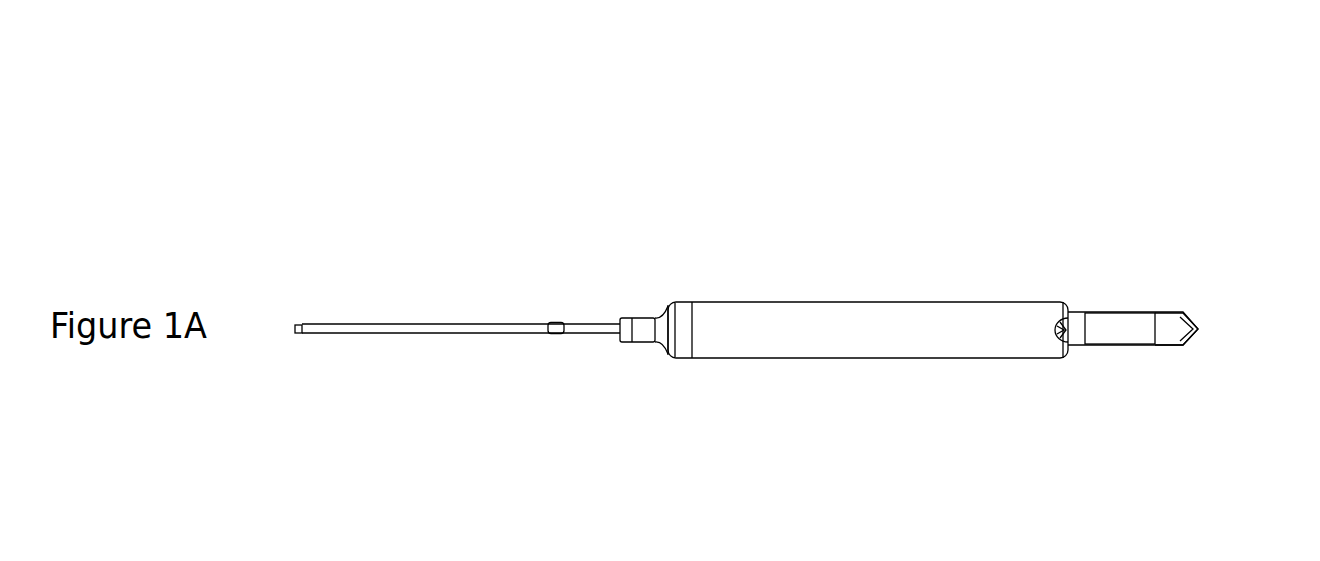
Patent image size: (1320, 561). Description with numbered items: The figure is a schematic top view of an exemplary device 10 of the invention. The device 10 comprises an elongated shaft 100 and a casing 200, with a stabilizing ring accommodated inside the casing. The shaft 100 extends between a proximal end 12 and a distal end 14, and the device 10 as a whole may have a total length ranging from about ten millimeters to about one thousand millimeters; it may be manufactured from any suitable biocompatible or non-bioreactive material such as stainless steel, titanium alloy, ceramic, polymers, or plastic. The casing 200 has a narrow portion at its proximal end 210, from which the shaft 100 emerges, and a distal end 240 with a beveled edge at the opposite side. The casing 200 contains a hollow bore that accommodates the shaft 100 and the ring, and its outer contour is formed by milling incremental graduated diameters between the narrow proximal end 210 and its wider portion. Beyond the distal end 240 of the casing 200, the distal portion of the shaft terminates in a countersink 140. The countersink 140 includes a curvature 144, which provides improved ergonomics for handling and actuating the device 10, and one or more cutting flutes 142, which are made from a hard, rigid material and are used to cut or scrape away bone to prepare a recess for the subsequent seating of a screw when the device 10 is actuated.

The device 10 is at (272, 157).
The proximal end 12 is at (270, 400).
The distal end 14 is at (1213, 437).
The elongated shaft 100 is at (510, 323).
The proximal end 210 is at (661, 312).
The casing 200 is at (908, 299).
The distal end 240 is at (1066, 304).
The countersink 140 is at (1175, 288).
The curvature 144 is at (1122, 314).
The cutting flutes 142 is at (1193, 314).